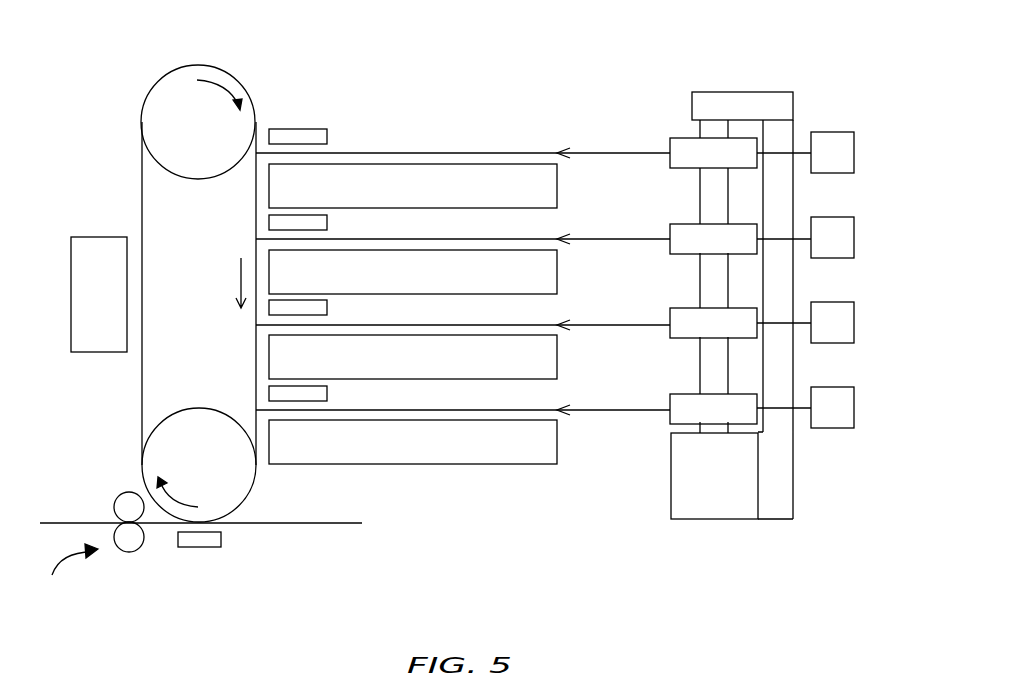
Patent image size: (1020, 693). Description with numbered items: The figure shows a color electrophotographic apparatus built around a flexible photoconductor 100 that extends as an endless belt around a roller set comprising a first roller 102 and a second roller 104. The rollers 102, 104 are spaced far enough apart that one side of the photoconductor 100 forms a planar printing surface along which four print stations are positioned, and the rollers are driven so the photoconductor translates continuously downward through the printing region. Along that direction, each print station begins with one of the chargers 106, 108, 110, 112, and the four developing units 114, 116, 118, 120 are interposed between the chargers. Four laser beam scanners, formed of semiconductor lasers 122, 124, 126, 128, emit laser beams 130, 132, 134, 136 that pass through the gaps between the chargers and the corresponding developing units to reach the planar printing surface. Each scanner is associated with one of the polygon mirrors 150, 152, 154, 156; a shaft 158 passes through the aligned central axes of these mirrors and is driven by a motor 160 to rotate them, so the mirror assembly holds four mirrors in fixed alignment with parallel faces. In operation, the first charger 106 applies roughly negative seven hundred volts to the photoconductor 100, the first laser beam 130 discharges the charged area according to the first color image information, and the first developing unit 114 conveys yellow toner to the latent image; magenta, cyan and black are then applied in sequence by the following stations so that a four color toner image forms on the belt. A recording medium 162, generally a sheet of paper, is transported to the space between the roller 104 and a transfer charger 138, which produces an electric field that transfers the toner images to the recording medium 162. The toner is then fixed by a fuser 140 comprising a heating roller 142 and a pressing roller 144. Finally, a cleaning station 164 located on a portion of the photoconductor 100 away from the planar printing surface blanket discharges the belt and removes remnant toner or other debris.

The flexible photoconductor 100 is at (257, 355).
The first roller 102 is at (168, 93).
The second roller 104 is at (215, 493).
The first charger 106 is at (327, 137).
The charger 108 is at (327, 223).
The charger 110 is at (327, 308).
The charger 112 is at (327, 394).
The first developing unit 114 is at (413, 186).
The developing unit 116 is at (413, 272).
The developing unit 118 is at (413, 357).
The developing unit 120 is at (413, 442).
The semiconductor laser 122 is at (840, 165).
The semiconductor laser 124 is at (840, 250).
The semiconductor laser 126 is at (840, 335).
The semiconductor laser 128 is at (840, 420).
The first laser beam 130 is at (627, 152).
The laser beam 132 is at (627, 237).
The laser beam 134 is at (627, 322).
The laser beam 136 is at (627, 407).
The transfer charger 138 is at (203, 547).
The fuser 140 is at (63, 572).
The heating roller 142 is at (120, 507).
The pressing roller 144 is at (122, 540).
The polygon mirror 150 is at (685, 143).
The polygon mirror 152 is at (685, 228).
The polygon mirror 154 is at (685, 313).
The polygon mirror 156 is at (685, 400).
The shaft 158 is at (663, 431).
The motor 160 is at (714, 476).
The recording medium 162 is at (361, 523).
The cleaning station 164 is at (99, 294).